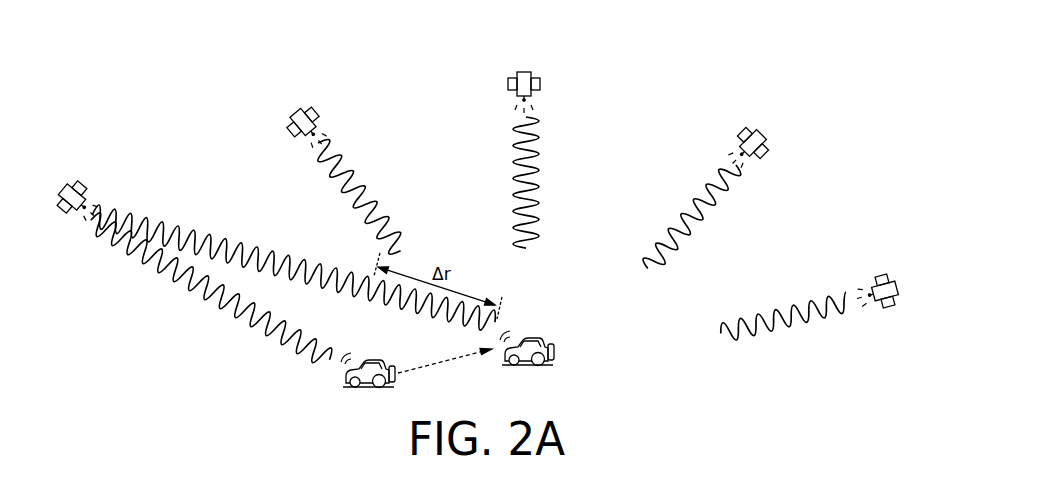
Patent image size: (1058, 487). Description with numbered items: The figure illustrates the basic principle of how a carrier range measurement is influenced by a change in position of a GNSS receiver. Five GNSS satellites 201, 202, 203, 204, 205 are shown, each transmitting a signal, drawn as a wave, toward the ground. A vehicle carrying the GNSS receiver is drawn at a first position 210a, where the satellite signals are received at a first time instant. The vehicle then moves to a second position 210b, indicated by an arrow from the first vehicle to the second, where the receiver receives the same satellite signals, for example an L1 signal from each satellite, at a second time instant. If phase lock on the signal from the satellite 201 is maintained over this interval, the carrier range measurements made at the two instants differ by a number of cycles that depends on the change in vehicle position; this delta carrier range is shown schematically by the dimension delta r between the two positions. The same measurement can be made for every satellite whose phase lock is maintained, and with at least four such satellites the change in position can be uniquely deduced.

The GNSS satellite 201 is at (71, 181).
The GNSS satellite 202 is at (302, 109).
The GNSS satellite 203 is at (524, 71).
The GNSS satellite 204 is at (760, 134).
The GNSS satellite 205 is at (899, 289).
The first position 210a is at (343, 381).
The second position 210b is at (556, 328).